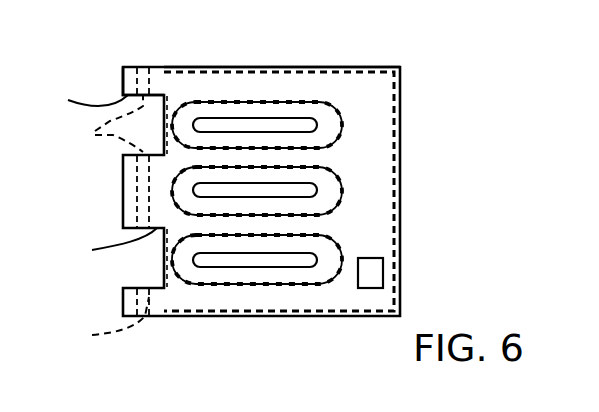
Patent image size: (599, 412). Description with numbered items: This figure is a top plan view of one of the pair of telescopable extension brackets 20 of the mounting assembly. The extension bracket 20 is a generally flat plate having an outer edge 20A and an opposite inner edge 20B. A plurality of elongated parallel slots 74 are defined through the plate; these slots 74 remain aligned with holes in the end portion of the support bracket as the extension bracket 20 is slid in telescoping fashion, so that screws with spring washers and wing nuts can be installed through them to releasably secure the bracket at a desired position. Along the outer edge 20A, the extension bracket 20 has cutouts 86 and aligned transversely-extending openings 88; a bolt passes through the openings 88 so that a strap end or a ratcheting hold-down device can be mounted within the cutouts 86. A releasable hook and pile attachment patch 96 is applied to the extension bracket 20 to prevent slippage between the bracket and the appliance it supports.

The extension bracket 20 is at (410, 133).
The outer edge 20A is at (370, 82).
The inner edge 20B is at (158, 85).
The elongated parallel slots 74 is at (265, 123).
The cutouts 86 is at (96, 174).
The transversely-extending openings 88 is at (105, 221).
The hook and pile attachment patch 96 is at (378, 276).